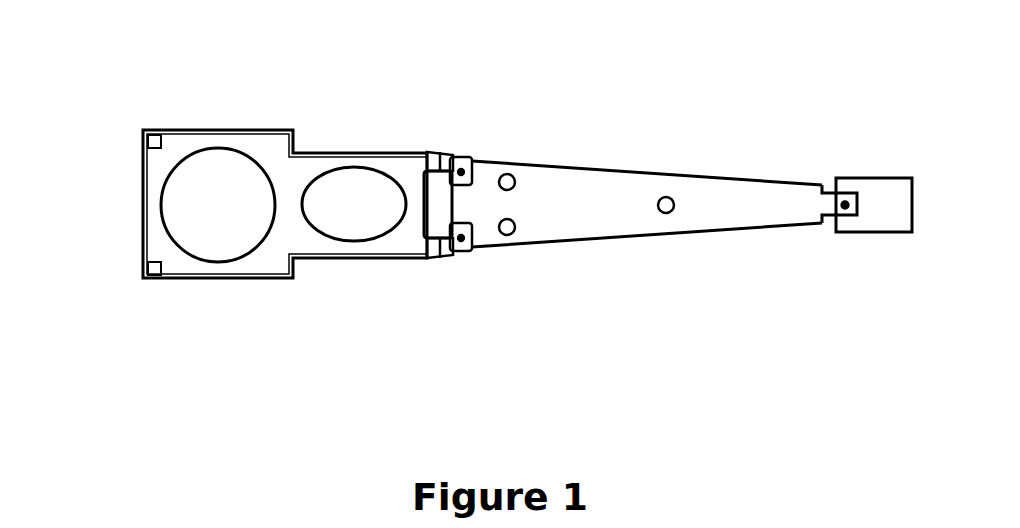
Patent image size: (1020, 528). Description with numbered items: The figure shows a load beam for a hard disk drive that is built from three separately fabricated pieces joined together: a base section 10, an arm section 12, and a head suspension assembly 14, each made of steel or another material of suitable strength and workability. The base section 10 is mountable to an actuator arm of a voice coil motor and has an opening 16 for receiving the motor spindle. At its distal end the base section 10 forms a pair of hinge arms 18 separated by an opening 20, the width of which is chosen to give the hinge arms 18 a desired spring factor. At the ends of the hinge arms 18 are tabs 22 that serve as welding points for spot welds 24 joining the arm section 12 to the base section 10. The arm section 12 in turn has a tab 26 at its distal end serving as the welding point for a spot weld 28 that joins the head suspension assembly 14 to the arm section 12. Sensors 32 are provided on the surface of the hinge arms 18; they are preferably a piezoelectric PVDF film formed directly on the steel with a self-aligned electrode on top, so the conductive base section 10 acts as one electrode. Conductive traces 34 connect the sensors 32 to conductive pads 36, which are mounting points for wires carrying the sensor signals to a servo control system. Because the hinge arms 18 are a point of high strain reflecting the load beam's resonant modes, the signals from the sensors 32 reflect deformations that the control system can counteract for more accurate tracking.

The base section 10 is at (255, 130).
The arm section 12 is at (615, 170).
The head suspension assembly 14 is at (892, 186).
The opening 16 is at (178, 212).
The hinge arms 18 is at (445, 152).
The opening 20 is at (438, 205).
The tabs 22 is at (460, 156).
The spot welds 24 is at (464, 165).
The tab 26 is at (830, 200).
The spot weld 28 is at (845, 202).
The sensors 32 is at (436, 154).
The conductive traces 34 is at (314, 153).
The conductive pads 36 is at (156, 136).